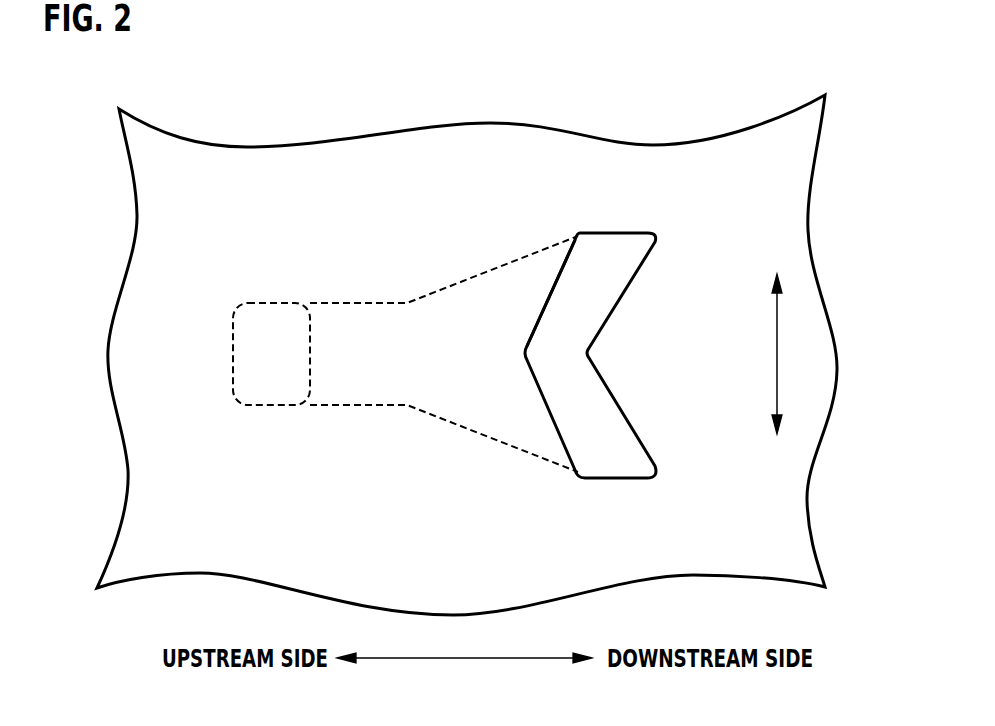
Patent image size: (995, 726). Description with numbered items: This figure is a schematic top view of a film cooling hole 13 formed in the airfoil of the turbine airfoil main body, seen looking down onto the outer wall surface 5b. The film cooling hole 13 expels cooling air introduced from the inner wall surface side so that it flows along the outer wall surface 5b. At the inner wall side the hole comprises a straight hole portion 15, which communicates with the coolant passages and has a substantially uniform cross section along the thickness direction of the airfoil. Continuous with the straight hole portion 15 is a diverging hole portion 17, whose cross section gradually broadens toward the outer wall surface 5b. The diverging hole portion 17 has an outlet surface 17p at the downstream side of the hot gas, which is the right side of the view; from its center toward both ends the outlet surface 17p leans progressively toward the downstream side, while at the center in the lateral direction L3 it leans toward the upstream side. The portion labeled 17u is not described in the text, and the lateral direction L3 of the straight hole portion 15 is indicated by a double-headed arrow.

The outer wall surface 5b is at (460, 157).
The outlet surface 17p is at (640, 245).
The upstream portion of protrusion 17u is at (537, 330).
The lateral direction L3 is at (778, 342).
The straight hole portion 15 is at (385, 405).
The diverging hole portion 17 is at (487, 331).
The film cooling hole 13 is at (449, 354).